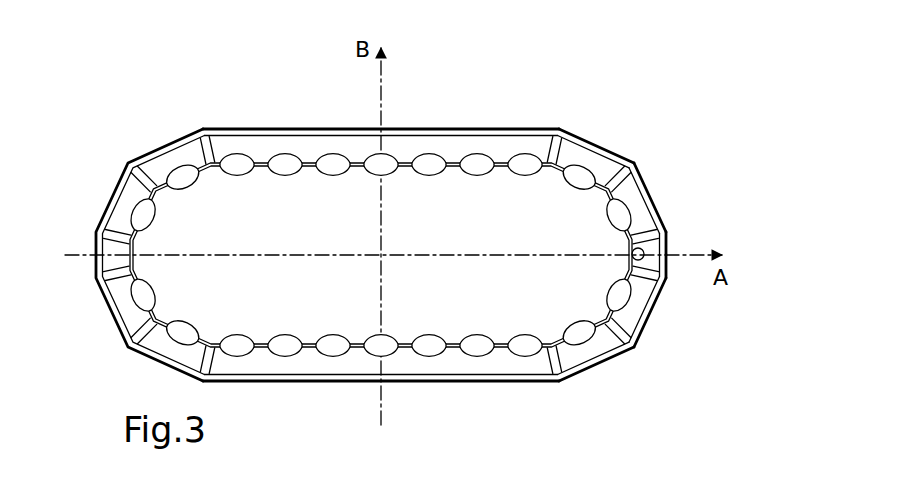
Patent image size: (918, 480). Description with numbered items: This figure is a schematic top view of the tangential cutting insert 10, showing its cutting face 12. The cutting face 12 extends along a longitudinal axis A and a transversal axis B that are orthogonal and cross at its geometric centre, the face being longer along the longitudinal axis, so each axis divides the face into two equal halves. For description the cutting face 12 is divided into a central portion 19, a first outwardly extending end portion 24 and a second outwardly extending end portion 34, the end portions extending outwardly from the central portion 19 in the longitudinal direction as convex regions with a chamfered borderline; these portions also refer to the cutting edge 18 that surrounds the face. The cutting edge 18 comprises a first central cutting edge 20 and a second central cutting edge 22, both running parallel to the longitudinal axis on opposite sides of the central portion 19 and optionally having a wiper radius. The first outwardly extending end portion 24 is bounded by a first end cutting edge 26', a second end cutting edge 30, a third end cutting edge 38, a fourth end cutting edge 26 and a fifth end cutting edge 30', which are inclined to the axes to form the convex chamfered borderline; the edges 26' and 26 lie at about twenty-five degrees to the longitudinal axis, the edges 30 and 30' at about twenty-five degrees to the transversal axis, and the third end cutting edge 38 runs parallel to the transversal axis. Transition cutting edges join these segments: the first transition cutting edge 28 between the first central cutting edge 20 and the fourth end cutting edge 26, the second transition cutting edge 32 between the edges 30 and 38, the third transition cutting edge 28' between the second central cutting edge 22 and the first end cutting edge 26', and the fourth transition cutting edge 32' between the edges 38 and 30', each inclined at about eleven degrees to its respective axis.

The tangential cutting insert 10 is at (606, 75).
The cutting face 12 is at (469, 205).
The cutting edge 18 is at (416, 122).
The central portion 19 is at (243, 203).
The first central cutting edge 20 is at (264, 128).
The second central cutting edge 22 is at (290, 382).
The first outwardly extending end portion 24 is at (590, 228).
The fourth end cutting edge 26 is at (609, 124).
The first end cutting edge 26' is at (621, 385).
The first transition cutting edge 28 is at (580, 119).
The third transition cutting edge 28' is at (581, 396).
The second end cutting edge 30 is at (665, 174).
The fifth end cutting edge 30' is at (676, 322).
The second transition cutting edge 32 is at (710, 220).
The fourth transition cutting edge 32' is at (706, 289).
The second outwardly extending end portion 34 is at (168, 230).
The third end cutting edge 38 is at (666, 251).